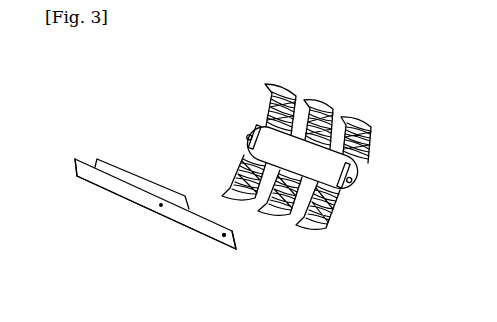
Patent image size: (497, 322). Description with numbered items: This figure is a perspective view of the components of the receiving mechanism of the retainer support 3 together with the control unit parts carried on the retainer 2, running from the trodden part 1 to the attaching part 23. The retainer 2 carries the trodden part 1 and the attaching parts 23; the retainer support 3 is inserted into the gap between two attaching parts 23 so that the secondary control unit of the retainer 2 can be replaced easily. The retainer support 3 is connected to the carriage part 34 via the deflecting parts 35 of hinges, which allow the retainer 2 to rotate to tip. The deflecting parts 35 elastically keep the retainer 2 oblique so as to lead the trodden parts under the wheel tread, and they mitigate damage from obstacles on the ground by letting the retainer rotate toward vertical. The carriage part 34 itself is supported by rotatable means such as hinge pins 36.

The trodden part 1 is at (372, 128).
The retainer 2 is at (233, 137).
The attaching part 23 is at (249, 131).
The retainer support 3 is at (110, 158).
The carriage part 34 is at (66, 161).
The deflecting part 35 is at (88, 182).
The hinge pin 36 is at (224, 235).